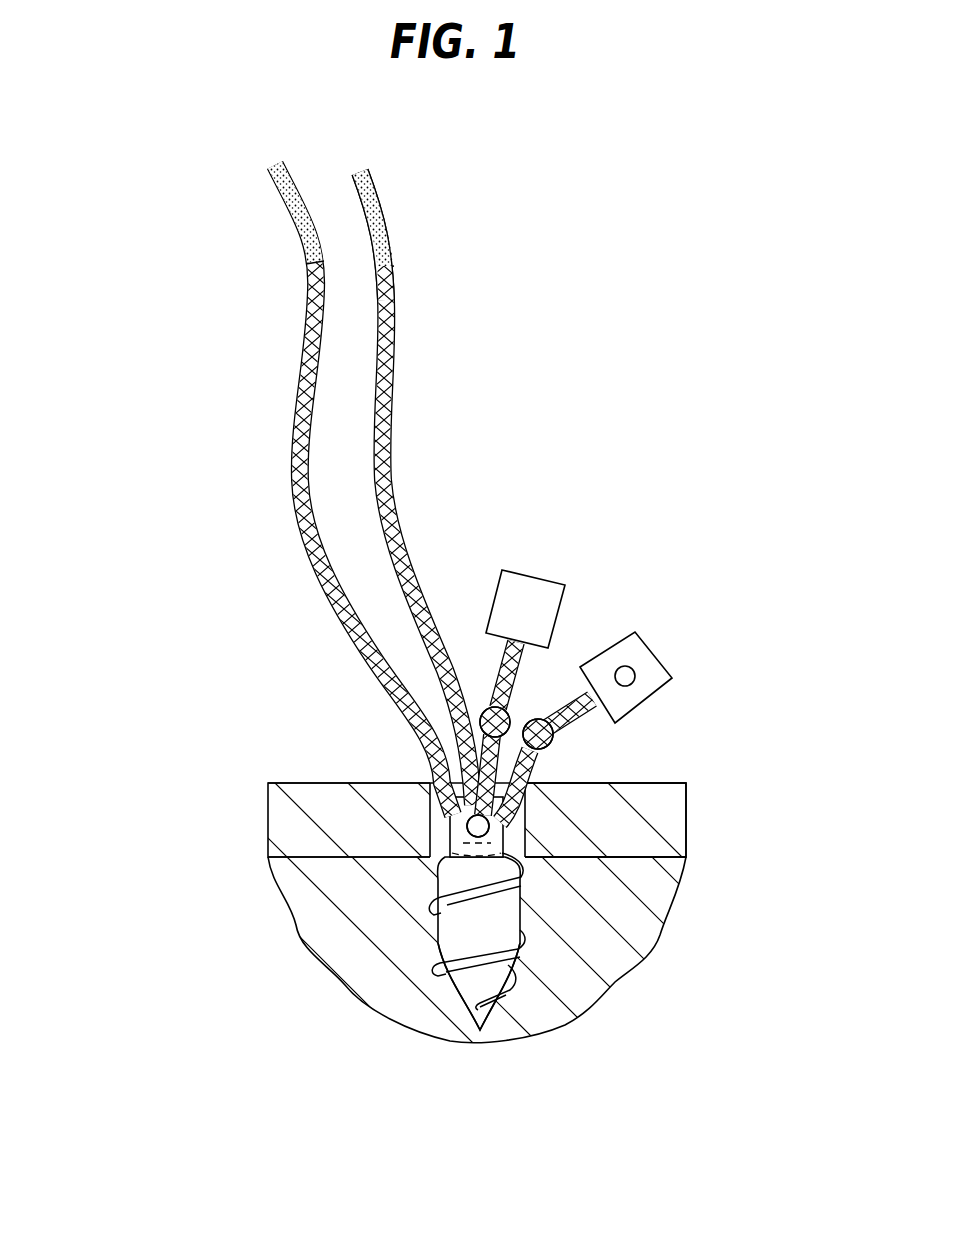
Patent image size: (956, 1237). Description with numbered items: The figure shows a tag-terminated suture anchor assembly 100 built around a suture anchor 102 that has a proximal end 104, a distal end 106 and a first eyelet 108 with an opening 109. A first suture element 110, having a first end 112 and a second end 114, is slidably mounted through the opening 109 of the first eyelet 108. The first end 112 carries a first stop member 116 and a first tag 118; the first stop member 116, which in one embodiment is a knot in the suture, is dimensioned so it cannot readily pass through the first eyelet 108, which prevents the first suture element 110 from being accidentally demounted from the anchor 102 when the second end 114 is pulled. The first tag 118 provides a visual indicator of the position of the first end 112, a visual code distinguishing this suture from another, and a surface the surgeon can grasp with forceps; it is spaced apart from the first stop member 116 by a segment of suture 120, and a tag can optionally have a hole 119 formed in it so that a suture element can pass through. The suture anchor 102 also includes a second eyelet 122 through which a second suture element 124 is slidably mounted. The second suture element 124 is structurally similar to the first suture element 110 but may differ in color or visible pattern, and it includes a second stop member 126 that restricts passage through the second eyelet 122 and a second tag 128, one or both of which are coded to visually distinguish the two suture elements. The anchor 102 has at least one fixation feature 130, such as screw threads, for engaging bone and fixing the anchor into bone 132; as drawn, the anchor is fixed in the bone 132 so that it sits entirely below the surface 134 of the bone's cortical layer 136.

The tag-terminated suture anchor assembly 100 is at (163, 327).
The suture anchor 102 is at (395, 975).
The proximal end 104 is at (378, 867).
The distal end 106 is at (462, 1025).
The first eyelet 108 is at (462, 822).
The opening 109 is at (495, 831).
The first suture element 110 is at (394, 462).
The first end 112 is at (584, 596).
The second end 114 is at (404, 209).
The first stop member 116 is at (486, 704).
The first tag 118 is at (533, 592).
The hole 119 is at (634, 675).
The segment of suture 120 is at (522, 680).
The second eyelet 122 is at (527, 853).
The second suture element 124 is at (290, 452).
The second stop member 126 is at (558, 749).
The second tag 128 is at (650, 686).
The fixation feature 130 is at (527, 935).
The bone 132 is at (258, 827).
The surface 134 is at (301, 783).
The cortical layer 136 is at (662, 828).